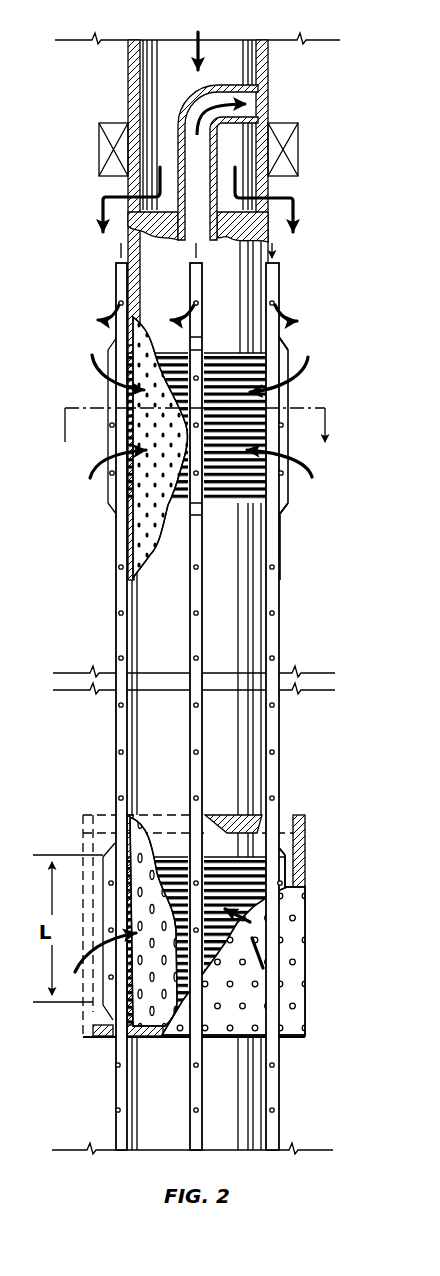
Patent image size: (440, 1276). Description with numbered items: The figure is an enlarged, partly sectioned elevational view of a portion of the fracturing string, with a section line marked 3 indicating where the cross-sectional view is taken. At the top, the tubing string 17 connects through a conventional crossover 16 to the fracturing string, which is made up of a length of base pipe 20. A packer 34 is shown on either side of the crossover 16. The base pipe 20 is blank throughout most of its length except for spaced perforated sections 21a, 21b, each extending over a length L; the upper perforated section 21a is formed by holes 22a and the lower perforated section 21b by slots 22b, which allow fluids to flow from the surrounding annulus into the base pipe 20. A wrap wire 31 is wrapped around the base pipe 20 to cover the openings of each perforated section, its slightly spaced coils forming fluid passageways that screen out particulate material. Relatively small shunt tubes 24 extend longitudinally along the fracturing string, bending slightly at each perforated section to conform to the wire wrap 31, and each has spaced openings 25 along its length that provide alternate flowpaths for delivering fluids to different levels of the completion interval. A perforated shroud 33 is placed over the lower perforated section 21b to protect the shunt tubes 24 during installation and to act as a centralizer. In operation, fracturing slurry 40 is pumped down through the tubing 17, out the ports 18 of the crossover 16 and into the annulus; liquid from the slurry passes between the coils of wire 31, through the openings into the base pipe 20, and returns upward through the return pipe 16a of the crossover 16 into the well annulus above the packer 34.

The crossover 16 is at (226, 72).
The return pipe 16a is at (268, 104).
The tubing string 17 is at (116, 76).
The ports 18 is at (287, 190).
The base pipe 20 is at (232, 594).
The perforated section 21a is at (100, 508).
The perforated section 21b is at (318, 912).
The holes 22a is at (152, 498).
The slots 22b is at (118, 846).
The shunt tubes 24 is at (116, 275).
The spaced openings 25 is at (118, 612).
The wrap wire 31 is at (280, 508).
The perforated shroud 33 is at (280, 997).
The packer 34 is at (99, 143).
The fracturing slurry 40 is at (196, 32).
The section line 3- 3 is at (196, 432).